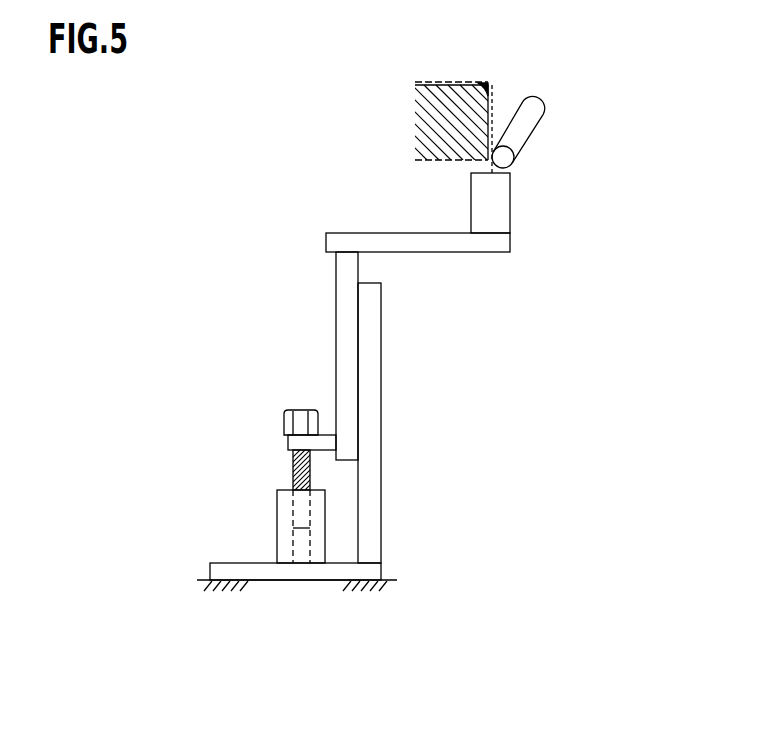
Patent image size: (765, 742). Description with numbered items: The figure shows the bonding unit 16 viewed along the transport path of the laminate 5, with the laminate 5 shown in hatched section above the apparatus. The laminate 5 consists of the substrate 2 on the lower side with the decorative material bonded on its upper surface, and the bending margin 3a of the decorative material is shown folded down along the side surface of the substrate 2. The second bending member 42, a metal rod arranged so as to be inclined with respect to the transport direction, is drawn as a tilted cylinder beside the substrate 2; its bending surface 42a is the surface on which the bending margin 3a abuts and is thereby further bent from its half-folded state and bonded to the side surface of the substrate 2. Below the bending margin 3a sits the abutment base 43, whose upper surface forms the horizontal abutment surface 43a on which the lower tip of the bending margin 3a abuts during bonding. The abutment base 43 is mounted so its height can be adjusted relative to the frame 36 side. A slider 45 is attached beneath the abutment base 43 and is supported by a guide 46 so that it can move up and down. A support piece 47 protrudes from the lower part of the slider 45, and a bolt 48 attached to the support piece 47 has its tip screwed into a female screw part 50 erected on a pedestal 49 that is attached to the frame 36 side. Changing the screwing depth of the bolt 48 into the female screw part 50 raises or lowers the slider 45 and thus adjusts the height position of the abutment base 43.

The substrate 2 is at (420, 100).
The laminate 5 is at (418, 138).
The bending margin 3a is at (493, 100).
The second bending member 42 is at (538, 127).
The bending surface 42a is at (510, 118).
The abutment base 43 is at (510, 207).
The abutment surface 43a is at (470, 168).
The slider 45 is at (336, 296).
The guide 46 is at (382, 340).
The support piece 47 is at (288, 440).
The bolt 48 is at (283, 418).
The pedestal 49 is at (235, 562).
The female screw part 50 is at (275, 510).
The frame 36 is at (389, 575).
The bonding unit 16 is at (591, 314).